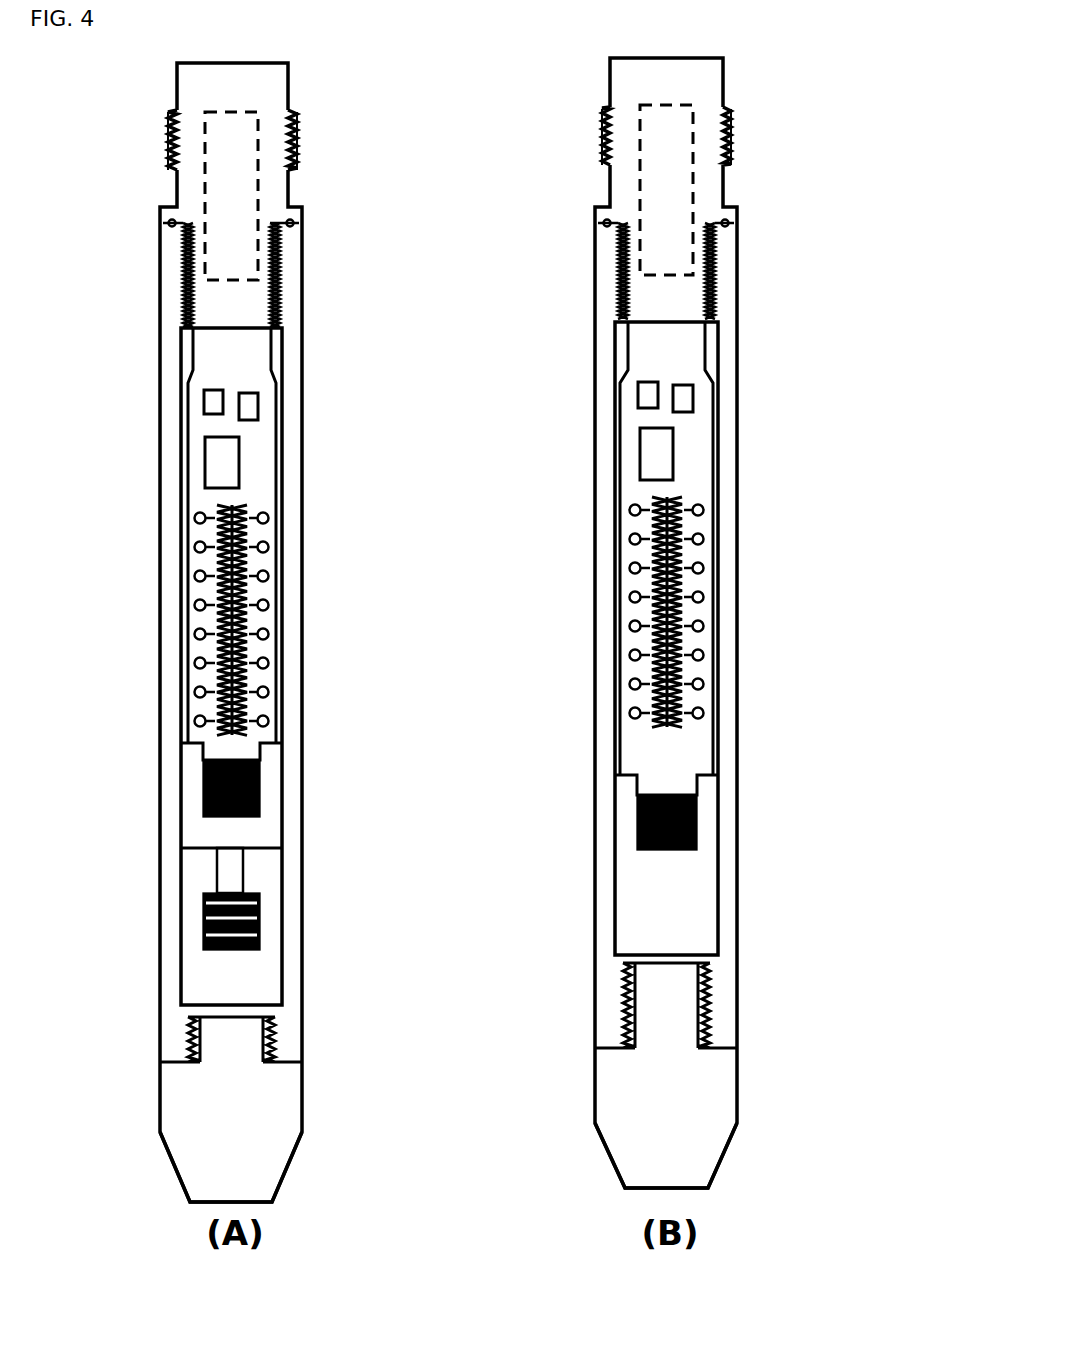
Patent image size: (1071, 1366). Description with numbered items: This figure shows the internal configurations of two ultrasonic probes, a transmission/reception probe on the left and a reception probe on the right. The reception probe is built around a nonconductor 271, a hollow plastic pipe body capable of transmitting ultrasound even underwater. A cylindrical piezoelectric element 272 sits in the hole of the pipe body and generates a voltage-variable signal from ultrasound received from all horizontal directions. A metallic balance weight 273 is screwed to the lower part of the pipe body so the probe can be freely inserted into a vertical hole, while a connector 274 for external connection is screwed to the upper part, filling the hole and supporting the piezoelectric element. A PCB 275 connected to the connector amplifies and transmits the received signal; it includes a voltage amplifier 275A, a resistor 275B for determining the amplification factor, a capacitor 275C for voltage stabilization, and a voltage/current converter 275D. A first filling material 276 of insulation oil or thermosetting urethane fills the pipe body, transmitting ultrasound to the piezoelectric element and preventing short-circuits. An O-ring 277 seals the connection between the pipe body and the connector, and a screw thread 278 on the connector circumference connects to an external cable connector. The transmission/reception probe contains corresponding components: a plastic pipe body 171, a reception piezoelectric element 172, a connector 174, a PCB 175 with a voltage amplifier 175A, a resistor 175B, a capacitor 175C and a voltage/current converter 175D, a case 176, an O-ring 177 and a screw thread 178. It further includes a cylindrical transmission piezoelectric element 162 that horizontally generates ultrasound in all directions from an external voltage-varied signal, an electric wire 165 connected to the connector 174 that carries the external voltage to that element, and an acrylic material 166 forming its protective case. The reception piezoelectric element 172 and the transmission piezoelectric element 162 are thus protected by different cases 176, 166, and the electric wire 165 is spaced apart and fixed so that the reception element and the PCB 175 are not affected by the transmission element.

The connector 174 is at (258, 137).
The screw thread 178 is at (296, 165).
The O-ring 177 is at (304, 212).
The PCB 175 is at (227, 355).
The voltage/current converter 175D is at (207, 407).
The capacitor 175C is at (259, 410).
The voltage amplifier 175A is at (225, 468).
The resistor 175B is at (265, 637).
The reception piezoelectric element 172 is at (266, 773).
The plastic pipe body 171 is at (306, 792).
The case 176 is at (263, 835).
The electric wire 165 is at (233, 885).
The piezoelectric element 162 is at (263, 915).
The acrylic material 166 is at (263, 975).
The metallic balance weight 273 is at (700, 1158).
The connector 274 is at (693, 123).
The screw thread 278 is at (722, 147).
The O-ring 277 is at (739, 208).
The PCB 275 is at (660, 338).
The voltage/current converter 275D is at (655, 385).
The capacitor 275C is at (692, 402).
The voltage amplifier 275A is at (660, 452).
The resistor 275B is at (713, 610).
The piezoelectric element 272 is at (700, 825).
The nonconductor 271 is at (742, 885).
The first filling material 276 is at (698, 937).